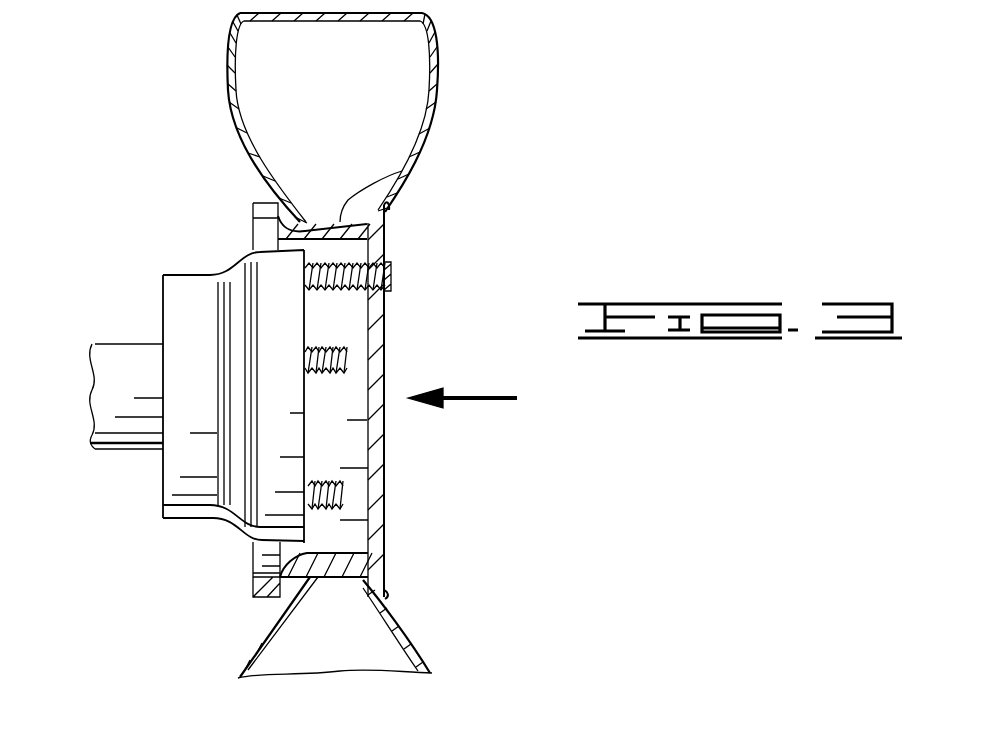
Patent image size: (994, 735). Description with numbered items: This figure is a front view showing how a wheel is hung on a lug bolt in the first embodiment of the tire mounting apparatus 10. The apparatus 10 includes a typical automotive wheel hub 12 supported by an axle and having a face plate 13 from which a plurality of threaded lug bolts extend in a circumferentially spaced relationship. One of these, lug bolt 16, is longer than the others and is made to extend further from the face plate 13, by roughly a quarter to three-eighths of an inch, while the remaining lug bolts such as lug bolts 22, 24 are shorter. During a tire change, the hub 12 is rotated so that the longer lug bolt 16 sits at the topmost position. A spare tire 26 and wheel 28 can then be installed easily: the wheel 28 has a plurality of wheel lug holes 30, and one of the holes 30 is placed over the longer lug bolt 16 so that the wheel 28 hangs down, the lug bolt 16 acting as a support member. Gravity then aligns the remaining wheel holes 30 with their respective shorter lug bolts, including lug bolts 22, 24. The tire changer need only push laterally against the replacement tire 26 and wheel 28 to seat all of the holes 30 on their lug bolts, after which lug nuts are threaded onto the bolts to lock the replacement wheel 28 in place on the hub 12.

The tire mounting apparatus 10 is at (418, 445).
The wheel hub 12 is at (273, 318).
The face plate 13 is at (305, 405).
The lug bolt 16 is at (387, 274).
The lug bolt 22 is at (348, 497).
The lug bolt 24 is at (345, 355).
The spare tire 26 is at (432, 123).
The wheel 28 is at (402, 172).
The wheel lug holes 30 is at (387, 266).